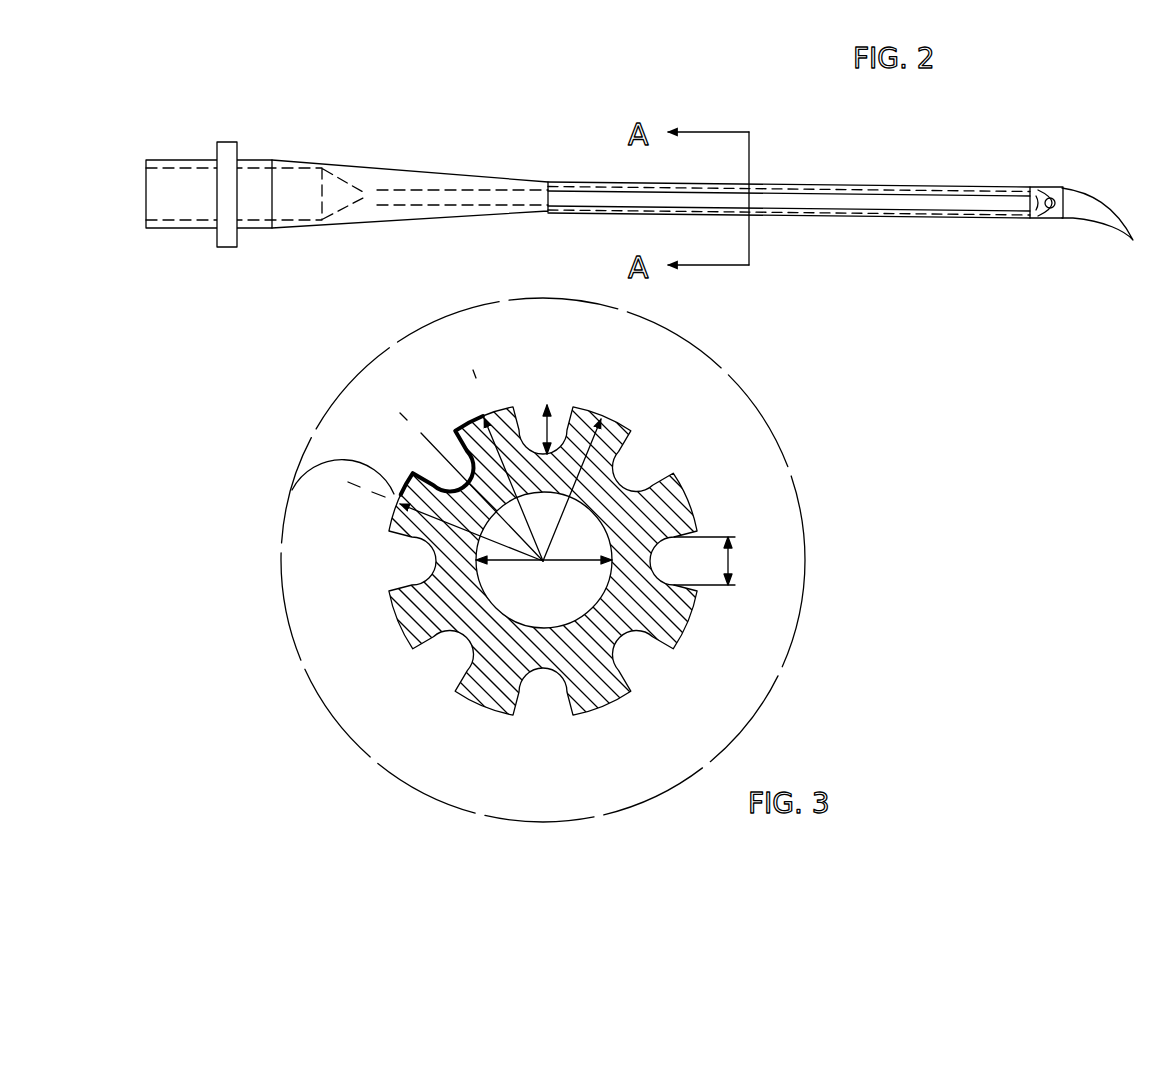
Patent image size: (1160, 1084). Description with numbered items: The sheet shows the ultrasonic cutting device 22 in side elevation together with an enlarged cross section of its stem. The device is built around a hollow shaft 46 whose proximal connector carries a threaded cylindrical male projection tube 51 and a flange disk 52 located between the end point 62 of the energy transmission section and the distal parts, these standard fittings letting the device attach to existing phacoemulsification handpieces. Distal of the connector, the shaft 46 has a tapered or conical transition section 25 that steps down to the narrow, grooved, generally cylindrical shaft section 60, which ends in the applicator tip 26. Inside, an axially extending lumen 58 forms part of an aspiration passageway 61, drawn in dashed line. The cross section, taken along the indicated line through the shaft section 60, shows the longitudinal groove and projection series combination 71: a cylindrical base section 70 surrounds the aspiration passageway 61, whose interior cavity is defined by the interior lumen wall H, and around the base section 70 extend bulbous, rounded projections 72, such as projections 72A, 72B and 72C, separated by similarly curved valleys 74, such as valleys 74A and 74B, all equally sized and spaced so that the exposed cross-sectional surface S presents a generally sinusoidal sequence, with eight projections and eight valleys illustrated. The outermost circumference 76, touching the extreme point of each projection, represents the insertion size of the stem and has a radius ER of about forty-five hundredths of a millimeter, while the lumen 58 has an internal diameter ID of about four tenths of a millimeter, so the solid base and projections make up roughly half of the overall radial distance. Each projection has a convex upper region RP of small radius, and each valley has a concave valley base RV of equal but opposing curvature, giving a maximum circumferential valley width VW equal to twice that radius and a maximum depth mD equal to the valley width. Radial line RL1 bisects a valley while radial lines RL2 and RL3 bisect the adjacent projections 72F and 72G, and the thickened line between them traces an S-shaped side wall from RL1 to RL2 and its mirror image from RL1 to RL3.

In FIG. 2, the cutting device 22 is at (961, 181).
In FIG. 2, the transition section 25 is at (410, 172).
In FIG. 2, the tip 26 is at (1087, 209).
In FIG. 2, the shaft 46 is at (499, 173).
In FIG. 2, the threaded cylindrical male projection tube 51 is at (167, 158).
In FIG. 2, the flange disk 52 is at (231, 141).
In FIG. 2, the lumen 58 is at (835, 198).
In FIG. 3, the lumen 58 is at (396, 612).
In FIG. 2, the shaft section 60 is at (905, 218).
In FIG. 3, the shaft section 60 is at (511, 403).
In FIG. 2, the aspiration passageway 61 is at (187, 187).
In FIG. 3, the aspiration passageway 61 is at (588, 557).
In FIG. 2, the end point 62 is at (147, 213).
In FIG. 3, the base section 70 is at (576, 657).
In FIG. 3, the longitudinal groove and projection series combination 71 is at (401, 537).
In FIG. 3, the projections 72 is at (474, 693).
In FIG. 3, the projection 72A is at (473, 697).
In FIG. 3, the projection 72B is at (610, 701).
In FIG. 3, the projection 72C is at (681, 619).
In FIG. 3, the projection 72F is at (498, 407).
In FIG. 3, the projection 72G is at (398, 510).
In FIG. 3, the valleys 74 is at (523, 701).
In FIG. 3, the valley 74A is at (541, 686).
In FIG. 3, the valley 74B is at (622, 641).
In FIG. 3, the circumference 76 is at (665, 676).
In FIG. 2, the exposed cross-sectional surface S is at (908, 186).
In FIG. 3, the exposed cross-sectional surface S is at (680, 483).
In FIG. 3, the interior lumen wall H is at (478, 630).
In FIG. 3, the convex upper region RP is at (481, 411).
In FIG. 3, the radial line RL1 is at (402, 394).
In FIG. 3, the radial line RL2 is at (477, 367).
In FIG. 3, the radial line RL3 is at (292, 490).
In FIG. 3, the concave valley base RV is at (629, 478).
In FIG. 3, the radius ER is at (621, 483).
In FIG. 3, the valley width VW is at (711, 561).
In FIG. 3, the maximum depth mD is at (553, 413).
In FIG. 3, the internal diameter ID is at (544, 578).